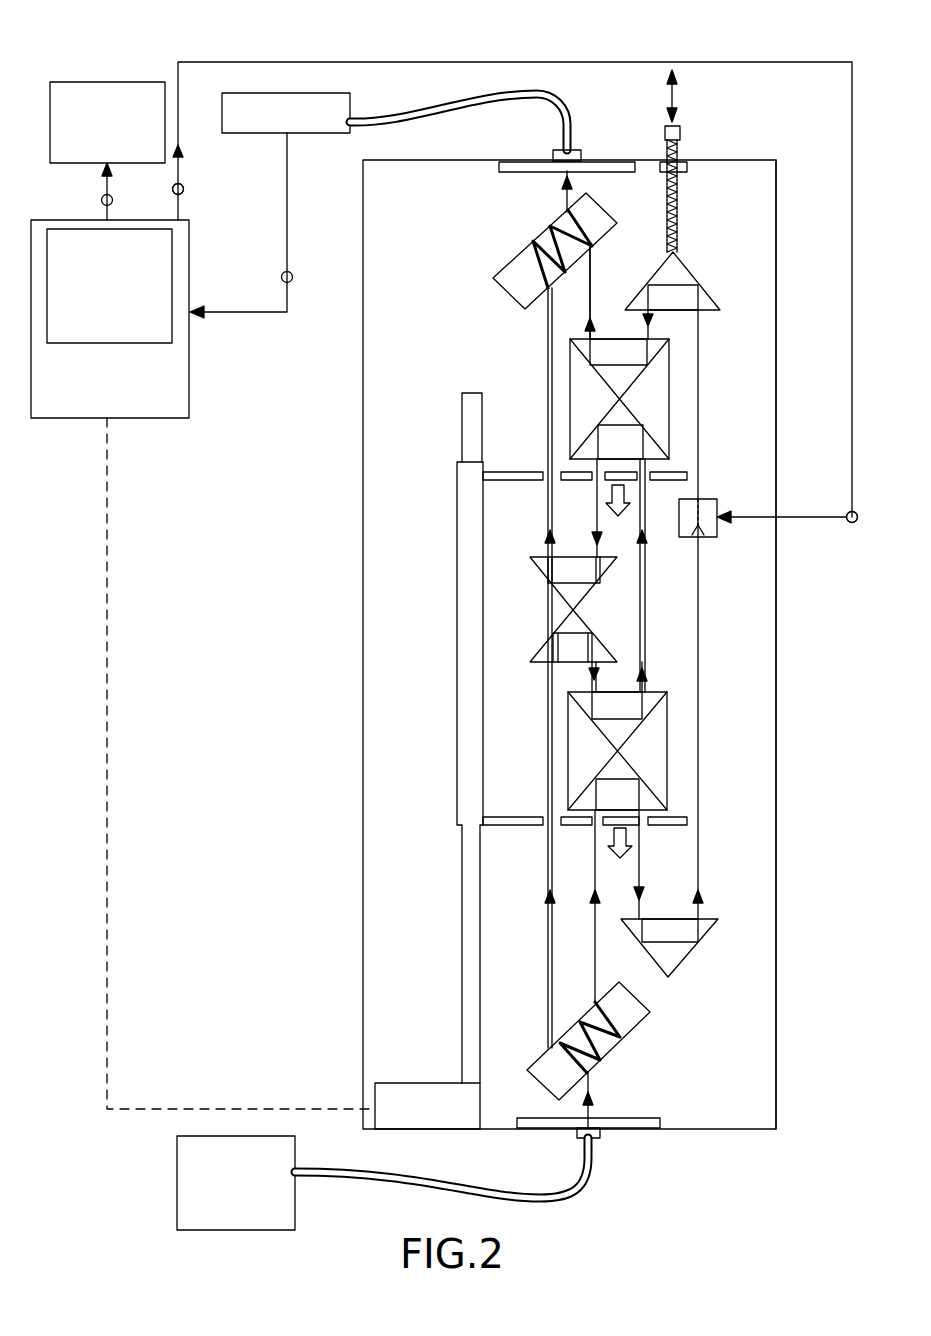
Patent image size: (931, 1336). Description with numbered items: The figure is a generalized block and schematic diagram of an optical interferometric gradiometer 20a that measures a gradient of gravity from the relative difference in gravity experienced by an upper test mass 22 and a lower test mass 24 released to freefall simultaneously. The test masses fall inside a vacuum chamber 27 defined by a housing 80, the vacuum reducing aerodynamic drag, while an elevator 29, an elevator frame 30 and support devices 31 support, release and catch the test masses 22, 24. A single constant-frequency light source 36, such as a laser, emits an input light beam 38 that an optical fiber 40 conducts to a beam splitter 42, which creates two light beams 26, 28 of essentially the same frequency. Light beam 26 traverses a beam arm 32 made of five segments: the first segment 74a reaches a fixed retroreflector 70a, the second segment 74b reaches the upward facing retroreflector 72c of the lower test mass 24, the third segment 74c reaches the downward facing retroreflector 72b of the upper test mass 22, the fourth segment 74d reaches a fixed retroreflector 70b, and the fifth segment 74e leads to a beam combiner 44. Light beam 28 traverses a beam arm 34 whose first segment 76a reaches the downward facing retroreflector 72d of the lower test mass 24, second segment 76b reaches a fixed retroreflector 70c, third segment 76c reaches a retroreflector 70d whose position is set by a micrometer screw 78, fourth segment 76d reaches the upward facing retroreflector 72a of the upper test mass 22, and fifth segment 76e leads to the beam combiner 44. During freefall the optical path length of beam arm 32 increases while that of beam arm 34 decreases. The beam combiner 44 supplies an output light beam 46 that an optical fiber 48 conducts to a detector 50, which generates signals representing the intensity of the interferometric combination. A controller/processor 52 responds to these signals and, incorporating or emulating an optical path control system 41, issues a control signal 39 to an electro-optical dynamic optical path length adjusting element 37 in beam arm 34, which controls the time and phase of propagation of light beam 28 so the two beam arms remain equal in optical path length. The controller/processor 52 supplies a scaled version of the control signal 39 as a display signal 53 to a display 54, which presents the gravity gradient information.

The optical interferometric gradiometer 20a is at (236, 528).
The upper test mass 22 is at (680, 392).
The lower test mass 24 is at (692, 736).
The light beam 26 is at (548, 322).
The vacuum chamber 27 is at (409, 246).
The light beam 28 is at (588, 322).
The elevator 29 is at (426, 1083).
The elevator frame 30 is at (457, 594).
The support devices 31 is at (516, 480).
The beam arm 32 is at (536, 450).
The beam arm 34 is at (602, 308).
The light source 36 is at (295, 1208).
The dynamic optical path length adjusting element 37 is at (720, 530).
The input light beam 38 is at (590, 1102).
The control signal 39 is at (184, 190).
The optical fiber 40 is at (592, 1174).
The optical path control system 41 is at (160, 266).
The beam splitter 42 is at (632, 1018).
The beam combiner 44 is at (510, 280).
The output light beam 46 is at (290, 282).
The optical fiber 48 is at (462, 114).
The detector 50 is at (270, 133).
The controller/processor 52 is at (152, 418).
The display signal 53 is at (101, 200).
The display 54 is at (80, 82).
The retroreflector 70a is at (548, 660).
The retroreflector 70b is at (544, 566).
The retroreflector 70c is at (708, 934).
The retroreflector 70d is at (688, 270).
The upward facing retroreflector 72a is at (646, 348).
The downward facing retroreflector 72b is at (650, 454).
The upward facing retroreflector 72c is at (640, 690).
The downward facing retroreflector 72d is at (648, 794).
The first segment 74a is at (548, 742).
The second segment 74b is at (594, 676).
The third segment 74c is at (645, 548).
The fourth segment 74d is at (592, 512).
The fifth segment 74e is at (546, 366).
The first segment 76a is at (594, 926).
The second segment 76b is at (642, 844).
The third segment 76c is at (700, 658).
The fourth segment 76d is at (652, 322).
The fifth segment 76e is at (590, 260).
The micrometer screw 78 is at (678, 160).
The housing 80 is at (776, 397).